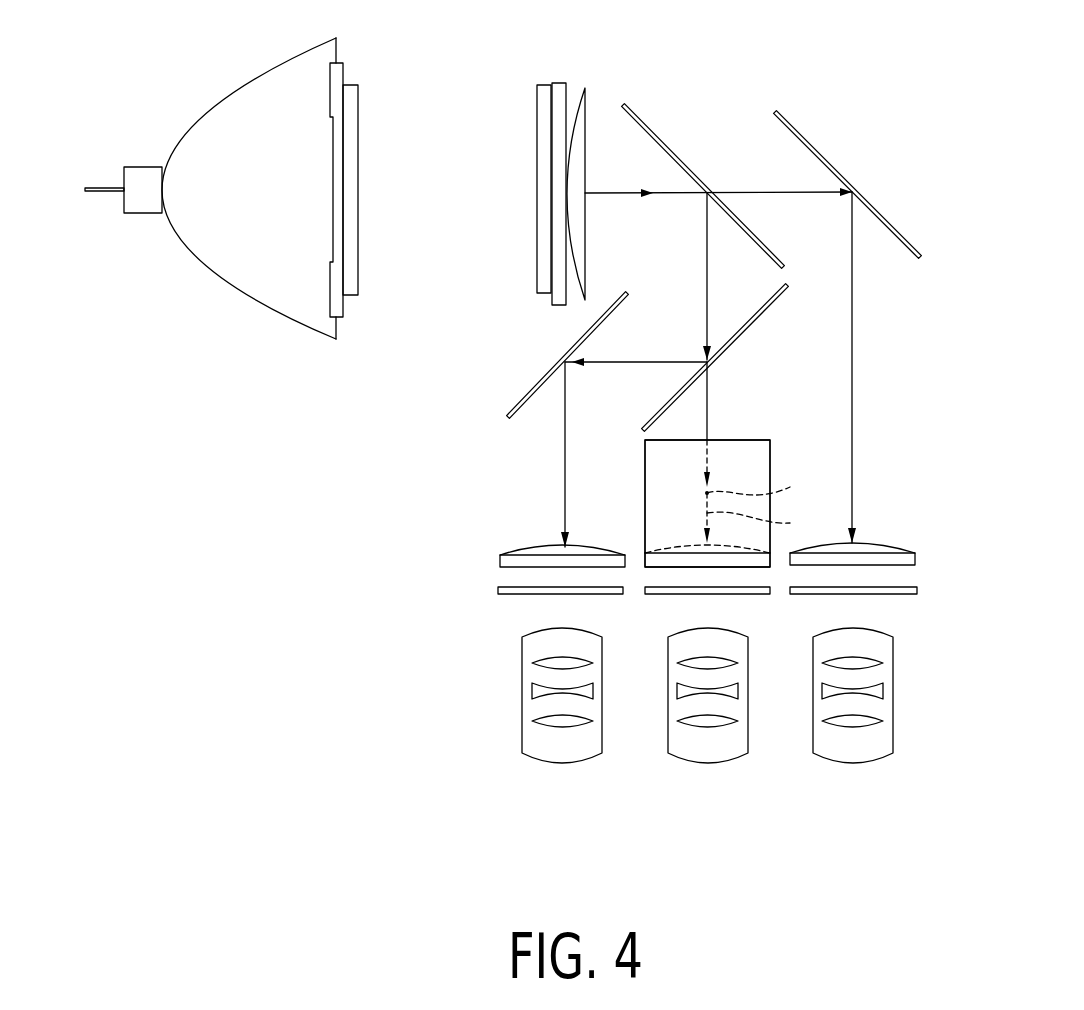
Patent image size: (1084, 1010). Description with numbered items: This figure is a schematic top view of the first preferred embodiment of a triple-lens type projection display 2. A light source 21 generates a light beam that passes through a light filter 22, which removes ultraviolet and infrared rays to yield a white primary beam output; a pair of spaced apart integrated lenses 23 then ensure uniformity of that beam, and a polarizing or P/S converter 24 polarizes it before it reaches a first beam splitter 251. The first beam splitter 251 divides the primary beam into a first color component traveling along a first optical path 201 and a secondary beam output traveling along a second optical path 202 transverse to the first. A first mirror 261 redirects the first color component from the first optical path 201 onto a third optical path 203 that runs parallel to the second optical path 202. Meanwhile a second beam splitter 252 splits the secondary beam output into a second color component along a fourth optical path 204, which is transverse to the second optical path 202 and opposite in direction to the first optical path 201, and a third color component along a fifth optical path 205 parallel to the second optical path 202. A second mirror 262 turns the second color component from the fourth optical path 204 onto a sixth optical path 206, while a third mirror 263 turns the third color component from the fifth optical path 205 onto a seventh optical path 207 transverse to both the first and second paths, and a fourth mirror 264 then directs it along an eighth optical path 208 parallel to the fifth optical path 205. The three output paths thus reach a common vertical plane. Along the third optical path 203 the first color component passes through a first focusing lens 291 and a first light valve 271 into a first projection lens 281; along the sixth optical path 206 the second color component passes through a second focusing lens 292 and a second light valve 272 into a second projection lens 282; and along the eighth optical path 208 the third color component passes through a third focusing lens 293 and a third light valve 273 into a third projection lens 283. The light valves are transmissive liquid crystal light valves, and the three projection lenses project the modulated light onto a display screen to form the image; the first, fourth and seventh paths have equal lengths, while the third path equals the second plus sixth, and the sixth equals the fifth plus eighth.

The triple-lens type projection display 2 is at (336, 420).
The light source 21 is at (207, 242).
The light filter 22 is at (337, 77).
The integrated lenses 23 is at (347, 150).
The P/S converter 24 is at (562, 97).
The first optical path 201 is at (770, 190).
The second optical path 202 is at (707, 247).
The third optical path 203 is at (857, 363).
The fourth optical path 204 is at (640, 358).
The fifth optical path 205 is at (710, 418).
The sixth optical path 206 is at (563, 440).
The seventh optical path 207 is at (770, 488).
The eighth optical path 208 is at (770, 518).
The first beam splitter 251 is at (655, 137).
The second beam splitter 252 is at (752, 322).
The first mirror 261 is at (833, 162).
The second mirror 262 is at (517, 405).
The third mirror 263 is at (770, 463).
The fourth mirror 264 is at (770, 440).
The first light valve 271 is at (900, 592).
The second light valve 272 is at (502, 595).
The third light valve 273 is at (753, 592).
The first projection lens 281 is at (862, 753).
The second projection lens 282 is at (533, 742).
The third projection lens 283 is at (708, 753).
The first focusing lens 291 is at (910, 553).
The second focusing lens 292 is at (500, 560).
The third focusing lens 293 is at (655, 558).